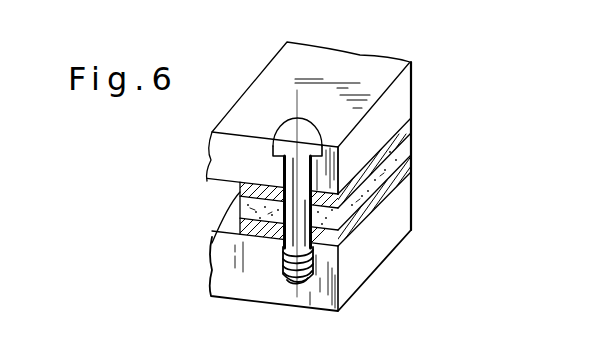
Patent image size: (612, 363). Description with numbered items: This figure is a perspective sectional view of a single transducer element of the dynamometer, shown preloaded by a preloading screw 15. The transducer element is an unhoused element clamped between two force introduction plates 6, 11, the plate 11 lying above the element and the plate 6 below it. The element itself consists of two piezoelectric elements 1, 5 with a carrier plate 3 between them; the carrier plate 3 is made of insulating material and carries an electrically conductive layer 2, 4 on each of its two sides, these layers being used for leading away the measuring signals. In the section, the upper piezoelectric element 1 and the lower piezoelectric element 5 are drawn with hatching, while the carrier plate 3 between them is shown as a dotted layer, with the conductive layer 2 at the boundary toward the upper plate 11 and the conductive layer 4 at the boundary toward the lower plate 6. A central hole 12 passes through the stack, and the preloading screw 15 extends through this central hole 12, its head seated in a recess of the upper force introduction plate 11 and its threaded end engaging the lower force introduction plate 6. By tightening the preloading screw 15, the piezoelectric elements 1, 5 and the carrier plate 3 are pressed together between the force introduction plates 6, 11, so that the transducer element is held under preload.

The piezoelectric element 1 is at (392, 143).
The electrically conductive layer 2 is at (240, 199).
The carrier plate 3 is at (393, 160).
The electrically conductive layer 4 is at (247, 223).
The piezoelectric element 5 is at (390, 182).
The force introduction plate 6 is at (382, 228).
The force introduction plate 11 is at (404, 92).
The central hole 12 is at (292, 251).
The preloading screw 15 is at (315, 134).